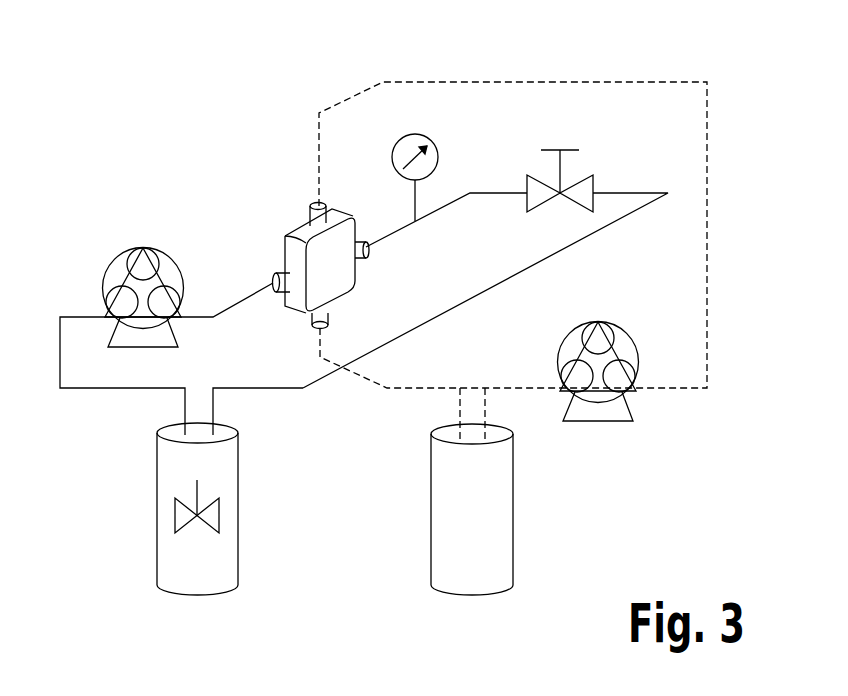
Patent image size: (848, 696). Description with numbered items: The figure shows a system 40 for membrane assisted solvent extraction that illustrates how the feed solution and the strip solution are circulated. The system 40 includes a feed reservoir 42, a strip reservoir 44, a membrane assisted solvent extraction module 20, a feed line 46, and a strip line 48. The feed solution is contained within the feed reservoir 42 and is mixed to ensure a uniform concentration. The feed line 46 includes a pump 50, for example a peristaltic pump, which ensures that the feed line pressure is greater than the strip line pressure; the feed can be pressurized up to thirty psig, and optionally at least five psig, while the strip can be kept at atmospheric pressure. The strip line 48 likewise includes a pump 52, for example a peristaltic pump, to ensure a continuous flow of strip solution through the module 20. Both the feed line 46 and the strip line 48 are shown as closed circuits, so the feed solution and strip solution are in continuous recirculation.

The membrane assisted solvent extraction module 20 is at (293, 236).
The system for membrane assisted solvent extraction 40 is at (300, 55).
The feed reservoir 42 is at (177, 468).
The strip reservoir 44 is at (500, 515).
The feed line 46 is at (76, 316).
The strip line 48 is at (426, 80).
The pump 50 is at (179, 268).
The pump 52 is at (633, 342).